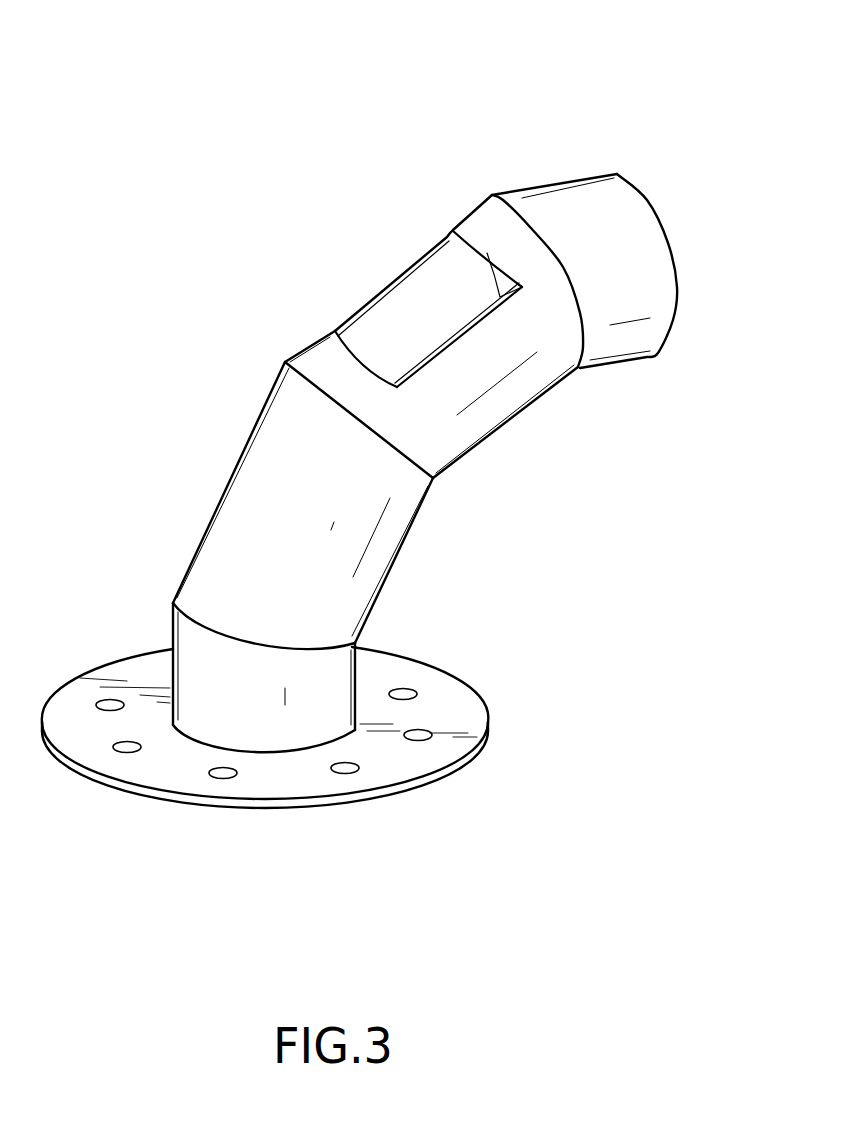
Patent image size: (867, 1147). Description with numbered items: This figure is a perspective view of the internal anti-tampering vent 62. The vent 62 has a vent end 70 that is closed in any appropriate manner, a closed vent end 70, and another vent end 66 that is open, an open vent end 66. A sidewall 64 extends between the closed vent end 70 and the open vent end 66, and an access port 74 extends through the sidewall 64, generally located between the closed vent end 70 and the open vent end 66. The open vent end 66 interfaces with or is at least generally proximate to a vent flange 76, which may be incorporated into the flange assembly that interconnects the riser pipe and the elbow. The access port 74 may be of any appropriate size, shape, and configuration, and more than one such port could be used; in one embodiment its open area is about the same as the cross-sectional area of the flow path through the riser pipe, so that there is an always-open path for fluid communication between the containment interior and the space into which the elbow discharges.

The vent 62 is at (470, 122).
The sidewall 64 is at (493, 407).
The open vent end 66 is at (287, 836).
The closed vent end 70 is at (673, 257).
The access port 74 is at (412, 303).
The vent flange 76 is at (450, 707).